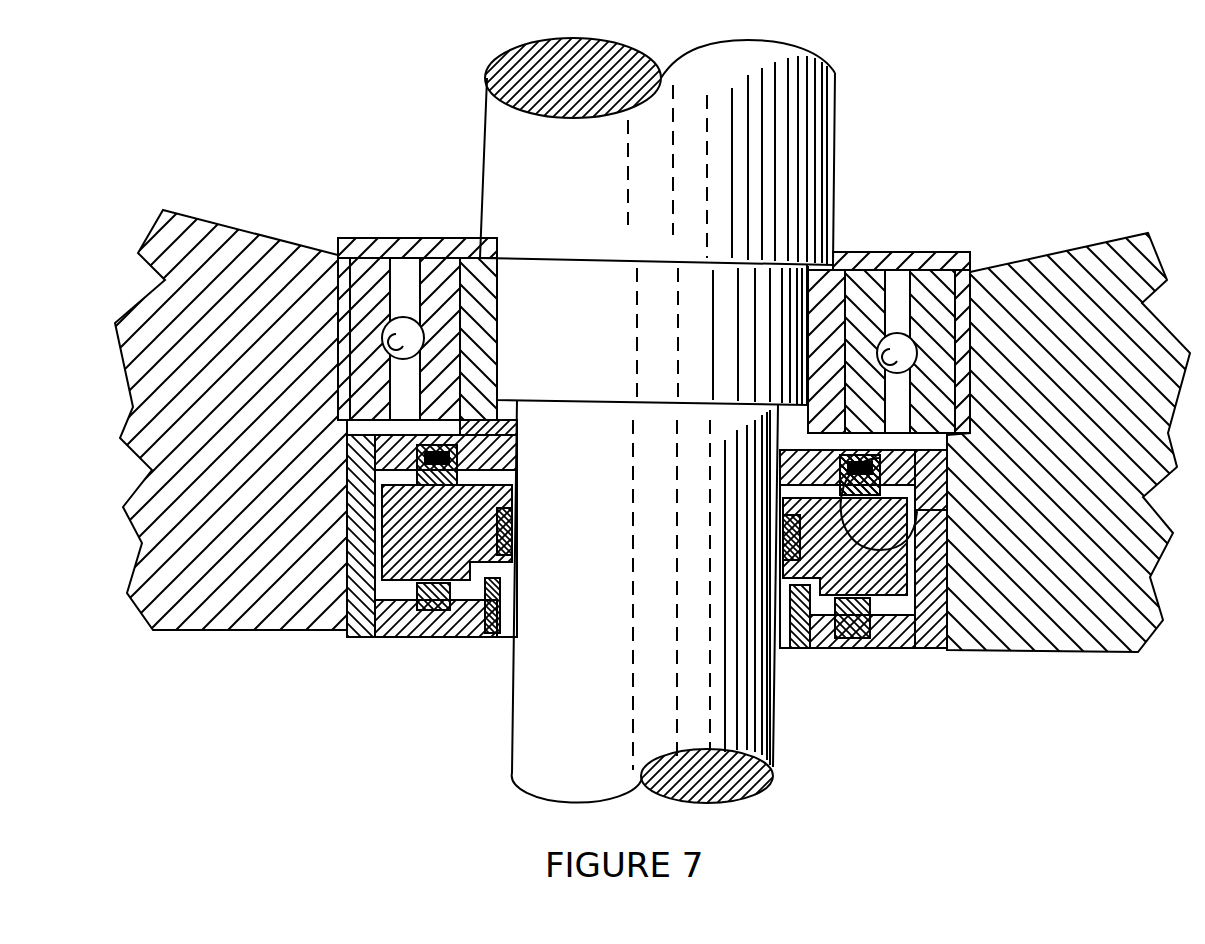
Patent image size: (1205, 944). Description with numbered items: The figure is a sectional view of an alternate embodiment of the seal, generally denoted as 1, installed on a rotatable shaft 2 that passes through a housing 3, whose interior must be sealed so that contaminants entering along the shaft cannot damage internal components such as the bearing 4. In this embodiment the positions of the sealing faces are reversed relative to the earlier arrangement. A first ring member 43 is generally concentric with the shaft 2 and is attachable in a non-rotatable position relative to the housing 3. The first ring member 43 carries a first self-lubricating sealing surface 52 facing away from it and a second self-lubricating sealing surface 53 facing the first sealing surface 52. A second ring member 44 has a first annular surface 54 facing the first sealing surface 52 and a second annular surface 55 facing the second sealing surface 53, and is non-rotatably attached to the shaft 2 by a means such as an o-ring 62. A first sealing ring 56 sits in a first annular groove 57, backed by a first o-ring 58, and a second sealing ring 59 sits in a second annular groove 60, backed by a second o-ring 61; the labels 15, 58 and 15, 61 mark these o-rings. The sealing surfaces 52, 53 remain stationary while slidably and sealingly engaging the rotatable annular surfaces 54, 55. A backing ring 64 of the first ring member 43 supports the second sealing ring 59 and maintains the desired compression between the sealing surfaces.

The invention 1 is at (970, 766).
The shaft 2 is at (773, 746).
The housing 3 is at (205, 632).
The bearing 4 is at (396, 210).
The sealing ring 15 is at (872, 478).
The first ring member 43 is at (517, 450).
The second ring member 44 is at (817, 600).
The first self-lubricating sealing surface 52 is at (497, 567).
The second self-lubricating sealing surface 53 is at (943, 575).
The first annular surface 54 is at (880, 618).
The second annular surface 55 is at (783, 472).
The first sealing ring 56 is at (482, 598).
The first annular groove 57 is at (514, 638).
The first o-ring 58 is at (418, 636).
The second sealing ring 59 is at (915, 520).
The second annular groove 60 is at (917, 492).
The second o-ring 61 is at (872, 478).
The o-ring 62 is at (518, 522).
The backing ring 64 is at (497, 428).